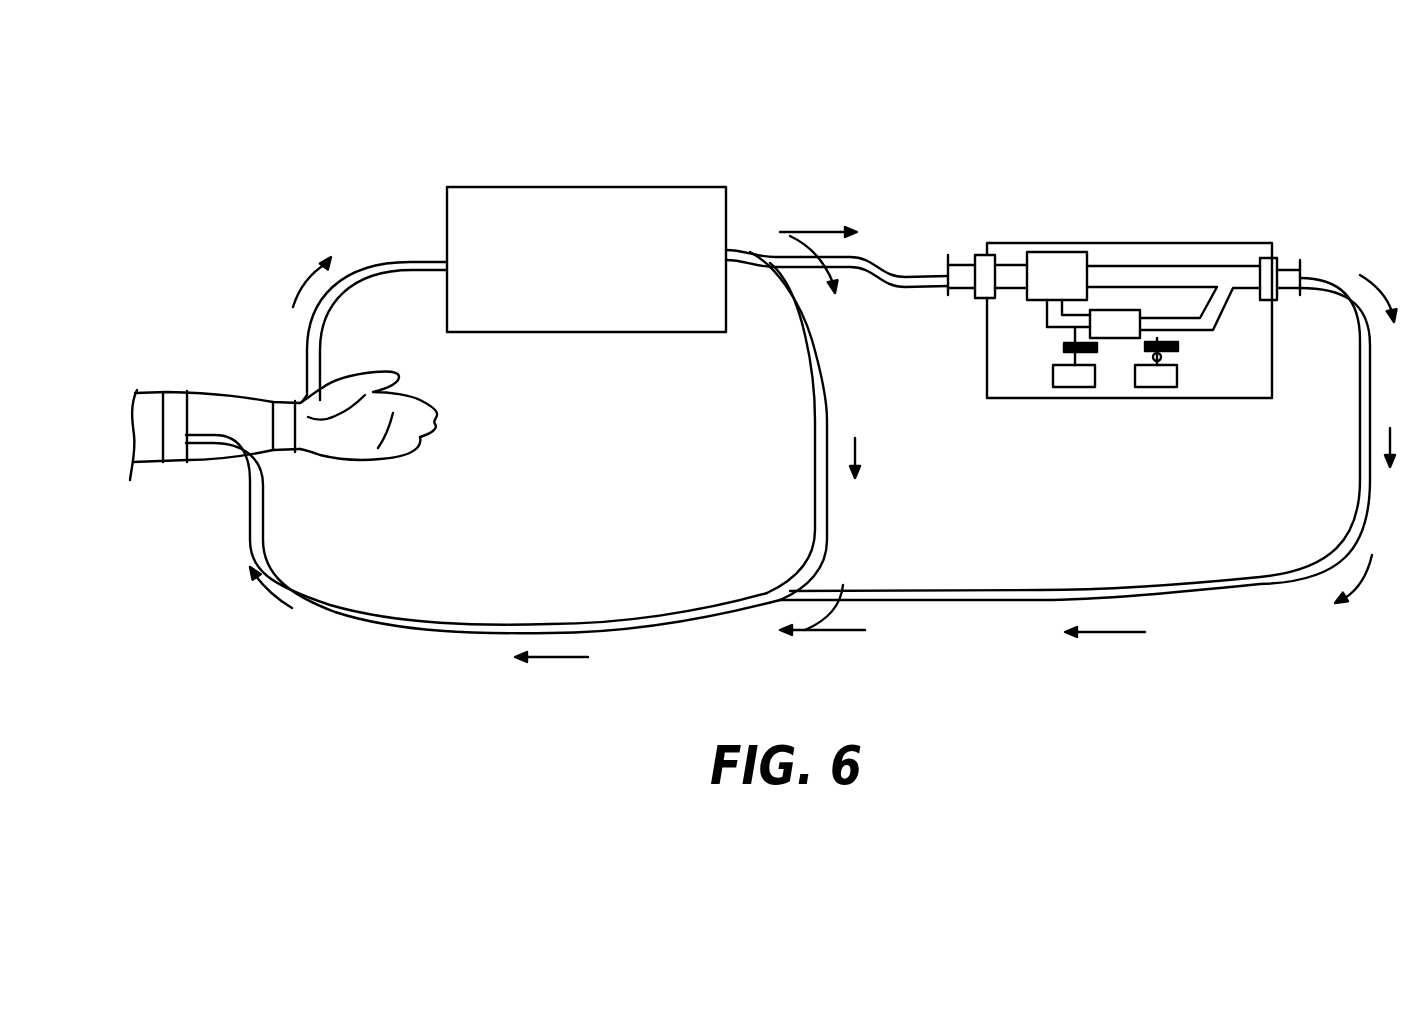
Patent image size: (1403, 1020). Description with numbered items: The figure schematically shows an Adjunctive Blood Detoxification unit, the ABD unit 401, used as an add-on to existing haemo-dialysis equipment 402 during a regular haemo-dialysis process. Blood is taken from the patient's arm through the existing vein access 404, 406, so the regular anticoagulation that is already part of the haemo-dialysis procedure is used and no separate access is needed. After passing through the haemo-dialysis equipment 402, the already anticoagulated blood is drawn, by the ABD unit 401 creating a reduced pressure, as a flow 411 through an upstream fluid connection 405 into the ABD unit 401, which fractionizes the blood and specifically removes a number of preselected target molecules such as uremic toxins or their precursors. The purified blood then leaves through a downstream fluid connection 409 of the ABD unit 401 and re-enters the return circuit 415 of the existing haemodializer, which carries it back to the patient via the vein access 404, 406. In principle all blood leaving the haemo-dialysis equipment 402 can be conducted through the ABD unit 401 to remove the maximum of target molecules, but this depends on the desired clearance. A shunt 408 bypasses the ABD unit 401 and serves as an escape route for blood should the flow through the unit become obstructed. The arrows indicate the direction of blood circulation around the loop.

The ABD unit 401 is at (1143, 270).
The haemo-dialysis equipment 402 is at (600, 187).
The vein access 404 is at (283, 450).
The upstream fluid connection 405 is at (983, 253).
The vein access 406 is at (135, 468).
The shunt 408 is at (815, 428).
The downstream fluid connection 409 is at (1268, 278).
The flow 411 is at (815, 232).
The return circuit 415 is at (835, 632).